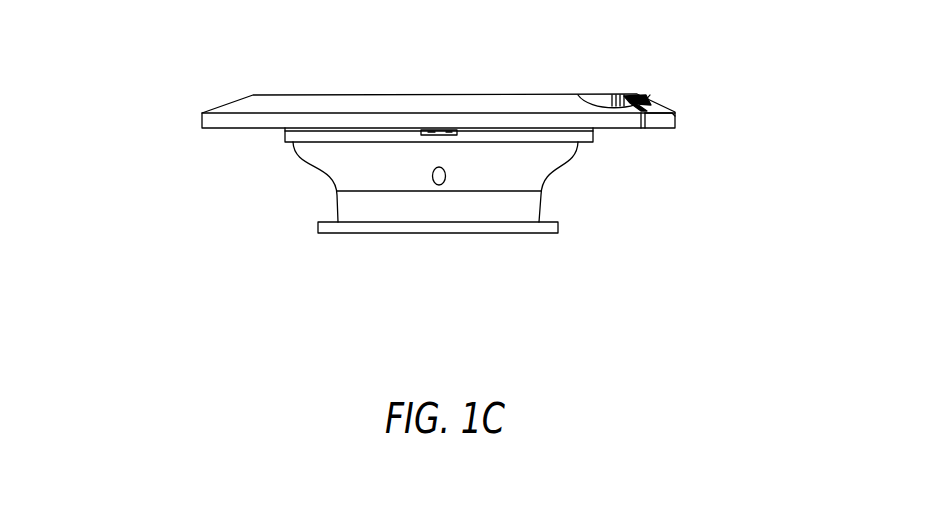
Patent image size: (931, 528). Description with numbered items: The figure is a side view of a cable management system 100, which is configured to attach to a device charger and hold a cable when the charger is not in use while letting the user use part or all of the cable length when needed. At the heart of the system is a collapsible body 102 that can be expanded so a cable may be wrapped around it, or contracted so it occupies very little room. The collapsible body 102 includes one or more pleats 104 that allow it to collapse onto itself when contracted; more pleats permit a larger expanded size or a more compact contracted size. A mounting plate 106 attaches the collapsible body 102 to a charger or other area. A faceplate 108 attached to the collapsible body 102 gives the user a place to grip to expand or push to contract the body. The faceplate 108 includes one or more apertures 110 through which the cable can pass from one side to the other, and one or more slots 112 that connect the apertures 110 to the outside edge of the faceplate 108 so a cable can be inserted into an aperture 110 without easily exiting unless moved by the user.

The cable management system 100 is at (172, 122).
The collapsible body 102 is at (327, 168).
The pleats 104 is at (563, 177).
The mounting plate 106 is at (517, 233).
The faceplate 108 is at (560, 99).
The apertures 110 is at (640, 98).
The slots 112 is at (645, 124).